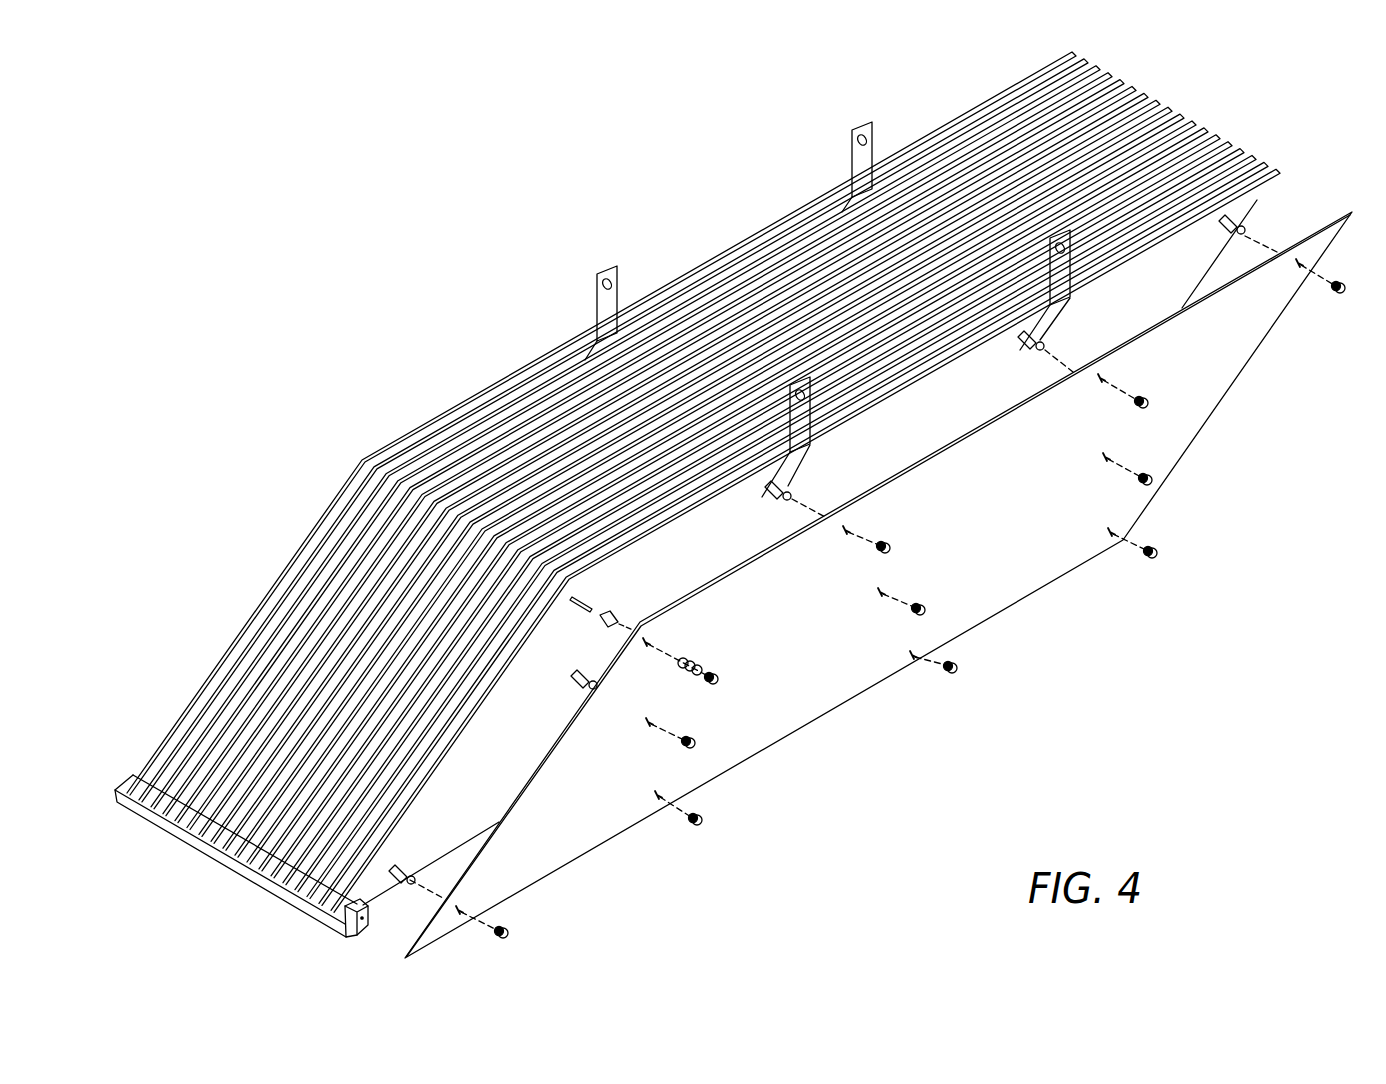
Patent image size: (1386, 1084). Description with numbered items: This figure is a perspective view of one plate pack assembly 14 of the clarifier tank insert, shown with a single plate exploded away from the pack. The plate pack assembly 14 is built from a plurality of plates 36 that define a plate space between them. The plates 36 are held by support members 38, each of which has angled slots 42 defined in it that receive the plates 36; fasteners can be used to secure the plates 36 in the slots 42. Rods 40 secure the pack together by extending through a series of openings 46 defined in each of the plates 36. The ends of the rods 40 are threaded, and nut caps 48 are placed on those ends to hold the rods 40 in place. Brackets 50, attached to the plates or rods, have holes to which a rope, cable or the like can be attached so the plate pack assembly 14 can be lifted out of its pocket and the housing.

The plate pack assembly 14 is at (1280, 110).
The plate 36 is at (1055, 68).
The support member 38 is at (166, 832).
The rod 40 is at (790, 492).
The angled slot 42 is at (345, 918).
The opening 46 is at (660, 795).
The nut cap 48 is at (704, 822).
The bracket 50 is at (873, 128).